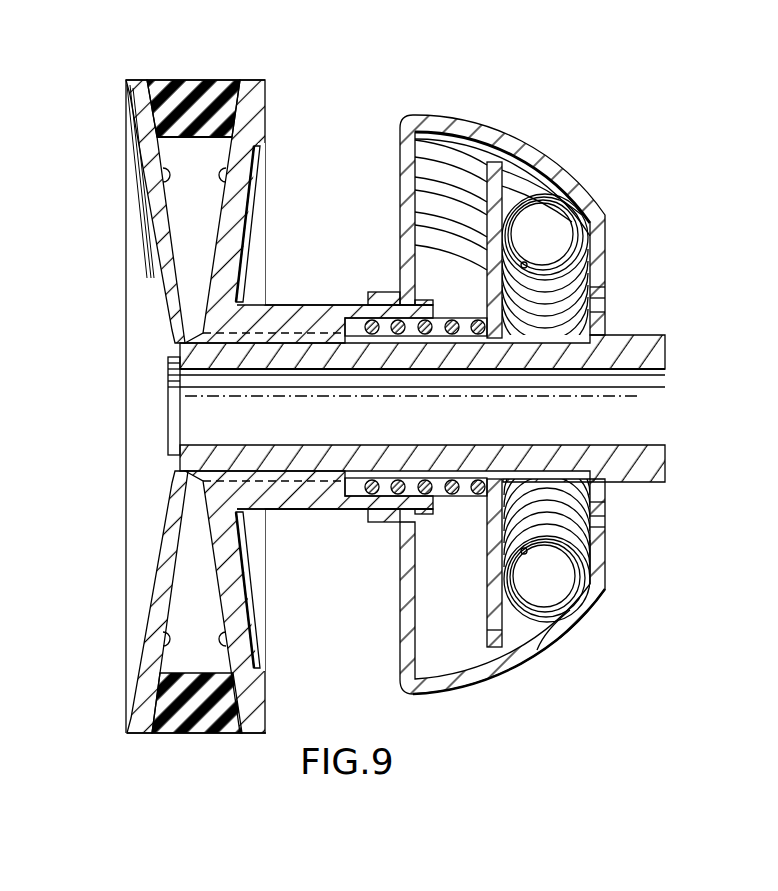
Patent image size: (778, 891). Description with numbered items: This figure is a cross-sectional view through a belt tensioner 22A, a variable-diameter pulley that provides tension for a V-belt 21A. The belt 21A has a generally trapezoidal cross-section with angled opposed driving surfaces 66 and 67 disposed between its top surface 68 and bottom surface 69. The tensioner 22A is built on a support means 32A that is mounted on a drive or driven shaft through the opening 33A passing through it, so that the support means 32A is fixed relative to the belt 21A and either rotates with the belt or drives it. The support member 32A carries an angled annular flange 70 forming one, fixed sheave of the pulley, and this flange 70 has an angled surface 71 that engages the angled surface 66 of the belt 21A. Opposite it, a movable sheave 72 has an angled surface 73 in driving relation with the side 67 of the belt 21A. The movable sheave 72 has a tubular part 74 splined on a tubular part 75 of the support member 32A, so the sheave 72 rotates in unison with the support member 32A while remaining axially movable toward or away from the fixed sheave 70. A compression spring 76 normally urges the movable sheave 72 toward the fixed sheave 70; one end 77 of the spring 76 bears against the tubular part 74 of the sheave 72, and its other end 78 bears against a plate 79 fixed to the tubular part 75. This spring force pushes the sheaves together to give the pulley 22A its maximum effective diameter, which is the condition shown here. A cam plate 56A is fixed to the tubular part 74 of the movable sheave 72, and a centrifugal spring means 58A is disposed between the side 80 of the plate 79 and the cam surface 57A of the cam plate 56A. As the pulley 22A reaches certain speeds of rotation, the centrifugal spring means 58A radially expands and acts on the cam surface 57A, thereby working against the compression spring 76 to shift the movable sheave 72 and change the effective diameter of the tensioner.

The belt 21A is at (163, 78).
The belt tensioner 22A is at (602, 146).
The support means 32A is at (193, 353).
The opening 33A is at (640, 445).
The cam plate 56A is at (577, 635).
The cam surface 57A is at (587, 605).
The centrifugal spring means 58A is at (598, 568).
The angled driving surface 66 is at (150, 100).
The angled driving surface 67 is at (237, 110).
The top surface 68 is at (212, 77).
The bottom surface 69 is at (175, 138).
The angled annular flange 70 is at (239, 406).
The angled surface 71 is at (170, 187).
The movable sheave 72 is at (238, 222).
The angled surface 73 is at (227, 170).
The tubular part 74 is at (292, 313).
The tubular part 75 is at (311, 330).
The compression spring 76 is at (452, 325).
The spring end 77 is at (365, 343).
The spring end 78 is at (478, 322).
The plate 79 is at (485, 223).
The side of plate 80 is at (505, 628).